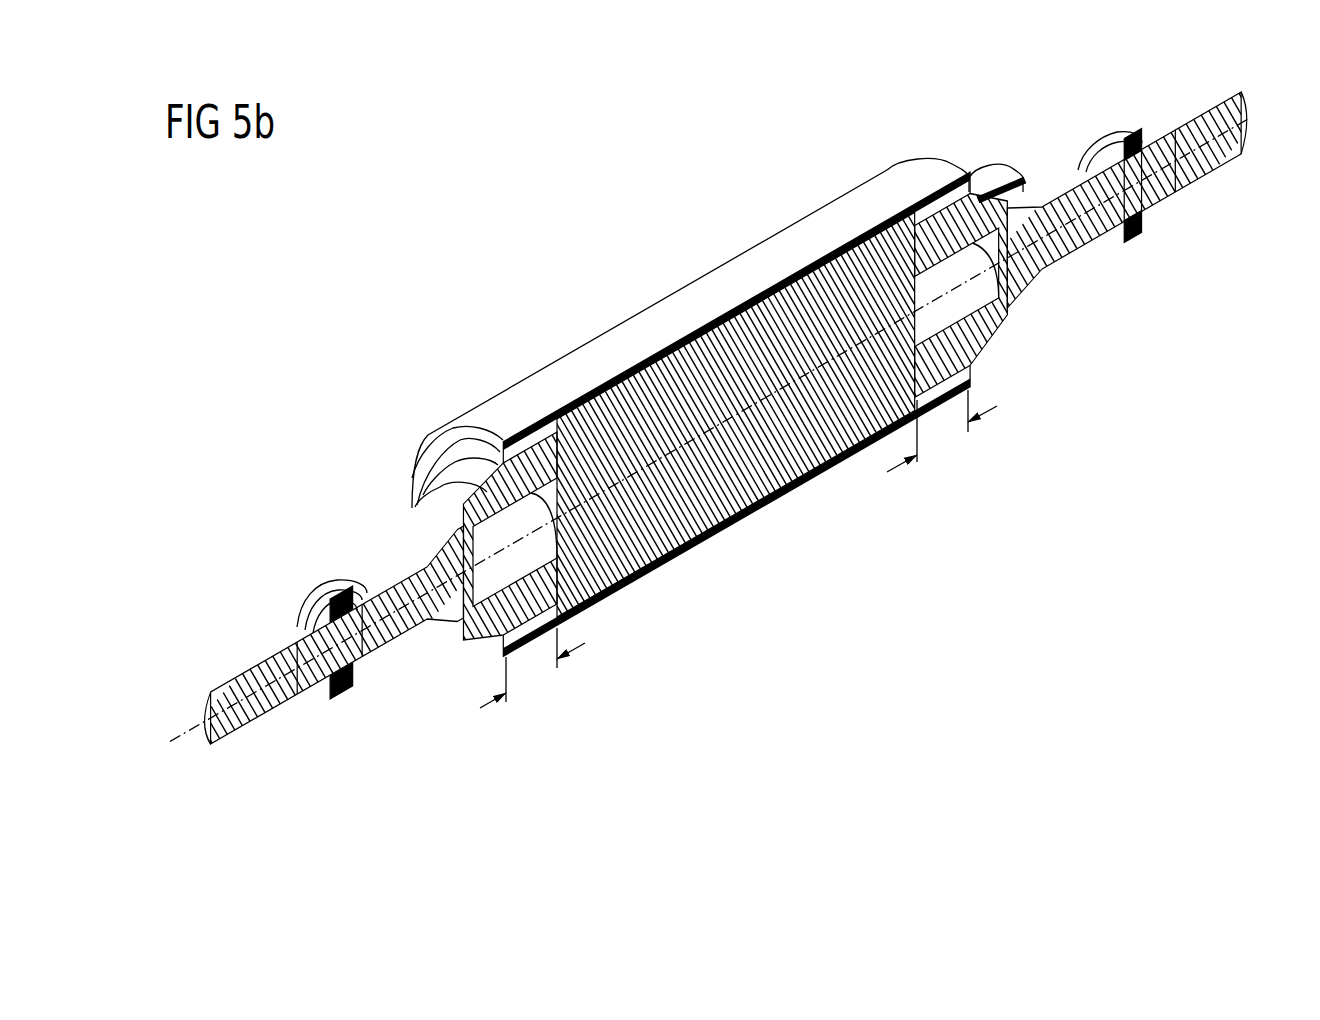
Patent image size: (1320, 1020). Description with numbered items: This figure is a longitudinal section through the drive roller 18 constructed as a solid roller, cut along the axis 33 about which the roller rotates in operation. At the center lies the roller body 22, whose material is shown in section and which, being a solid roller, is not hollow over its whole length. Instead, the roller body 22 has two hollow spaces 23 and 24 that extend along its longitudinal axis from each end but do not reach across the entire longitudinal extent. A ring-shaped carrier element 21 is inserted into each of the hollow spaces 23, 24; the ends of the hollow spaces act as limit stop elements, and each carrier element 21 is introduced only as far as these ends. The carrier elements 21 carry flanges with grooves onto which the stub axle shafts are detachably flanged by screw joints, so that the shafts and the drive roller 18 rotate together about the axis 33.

The drive roller 18 is at (494, 272).
The carrier element 21 is at (522, 430).
The roller body 22 is at (772, 485).
The hollow space 23 is at (942, 431).
The hollow space 24 is at (532, 668).
The axis 33 is at (178, 744).